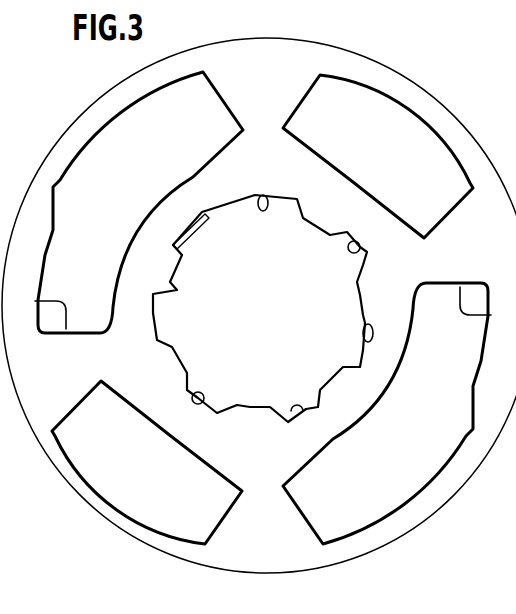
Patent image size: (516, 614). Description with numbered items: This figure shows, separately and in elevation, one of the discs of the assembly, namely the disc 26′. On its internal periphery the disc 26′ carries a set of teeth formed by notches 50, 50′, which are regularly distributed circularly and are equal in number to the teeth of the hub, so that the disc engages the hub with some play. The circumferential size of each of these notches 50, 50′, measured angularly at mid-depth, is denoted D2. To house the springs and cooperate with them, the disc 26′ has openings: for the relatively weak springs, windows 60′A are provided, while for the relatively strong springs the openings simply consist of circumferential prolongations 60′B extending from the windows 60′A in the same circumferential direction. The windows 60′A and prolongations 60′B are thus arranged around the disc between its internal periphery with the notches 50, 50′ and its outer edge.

The disc 26′ is at (424, 86).
The window 60′A is at (105, 122).
The circumferential prolongation 60′B is at (462, 300).
The notch 50′ is at (264, 196).
The notch 50 is at (367, 323).
The circumferential size of notch D2 is at (196, 240).